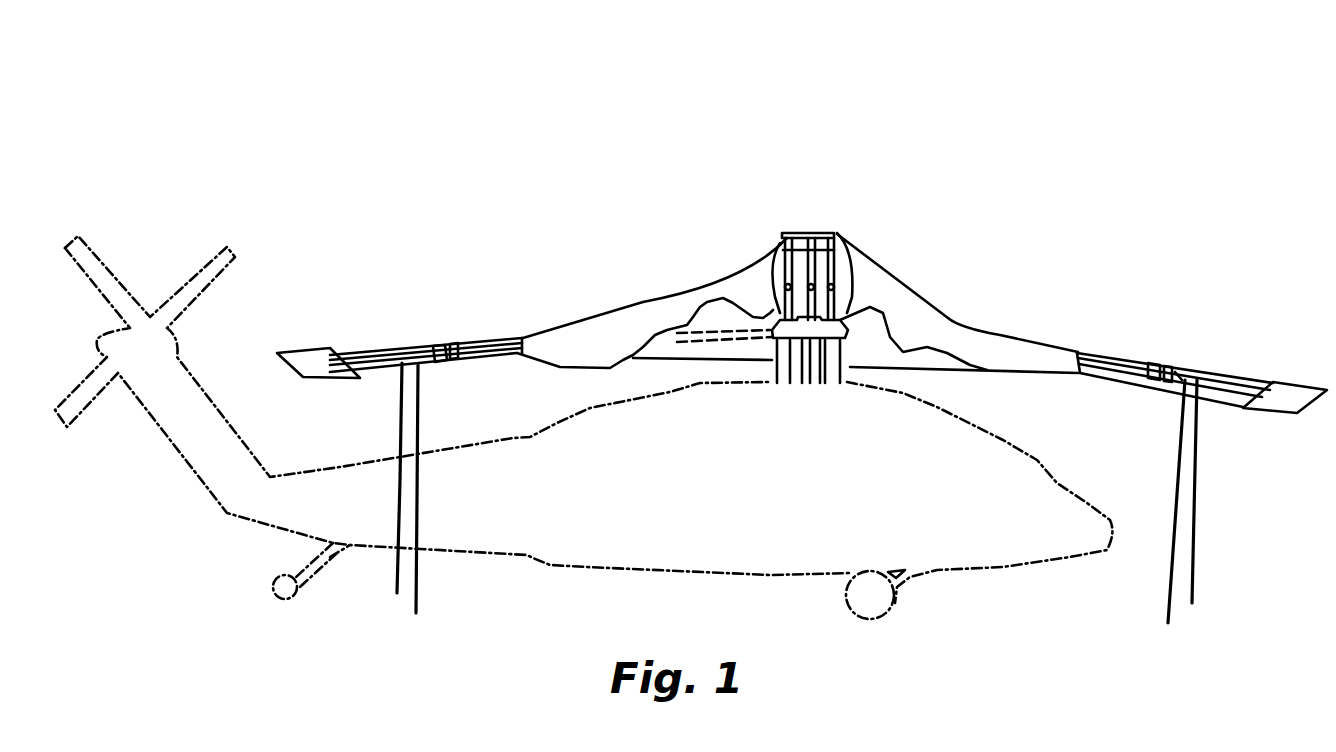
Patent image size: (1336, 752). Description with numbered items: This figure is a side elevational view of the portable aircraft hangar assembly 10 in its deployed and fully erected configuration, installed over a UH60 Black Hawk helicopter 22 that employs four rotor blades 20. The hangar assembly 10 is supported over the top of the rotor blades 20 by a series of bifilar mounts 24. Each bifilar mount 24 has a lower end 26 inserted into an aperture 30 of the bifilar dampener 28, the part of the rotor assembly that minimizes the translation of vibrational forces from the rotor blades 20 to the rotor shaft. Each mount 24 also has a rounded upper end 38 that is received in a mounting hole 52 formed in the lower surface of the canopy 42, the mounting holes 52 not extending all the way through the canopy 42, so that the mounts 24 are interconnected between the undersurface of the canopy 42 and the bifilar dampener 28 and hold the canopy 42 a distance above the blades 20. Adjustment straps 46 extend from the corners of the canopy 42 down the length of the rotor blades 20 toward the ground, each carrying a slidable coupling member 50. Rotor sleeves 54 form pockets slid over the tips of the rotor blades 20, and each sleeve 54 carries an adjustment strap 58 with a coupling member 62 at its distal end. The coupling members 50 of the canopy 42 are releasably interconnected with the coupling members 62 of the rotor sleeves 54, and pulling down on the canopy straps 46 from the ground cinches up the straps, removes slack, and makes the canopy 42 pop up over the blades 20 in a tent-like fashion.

The portable aircraft hangar assembly 10 is at (993, 167).
The rotor blades 20 is at (673, 340).
The UH60 Black Hawk helicopter 22 is at (975, 460).
The bifilar mounts 24 is at (813, 237).
The lower ends 26 is at (757, 317).
The bifilar dampener 28 is at (880, 323).
The apertures 30 is at (780, 243).
The rounded upper end 38 is at (827, 230).
The canopy 42 is at (953, 313).
The adjustment straps 46 is at (465, 343).
The coupling member 50 is at (445, 340).
The mounting holes 52 is at (790, 317).
The rotor sleeves 54 is at (310, 350).
The adjustment strap 58 is at (360, 352).
The coupling member 62 is at (1177, 373).